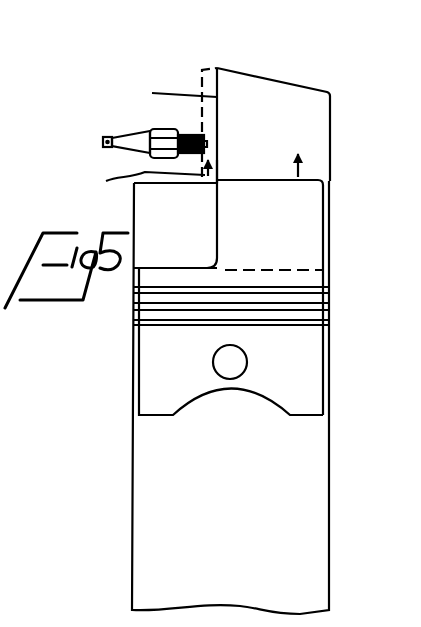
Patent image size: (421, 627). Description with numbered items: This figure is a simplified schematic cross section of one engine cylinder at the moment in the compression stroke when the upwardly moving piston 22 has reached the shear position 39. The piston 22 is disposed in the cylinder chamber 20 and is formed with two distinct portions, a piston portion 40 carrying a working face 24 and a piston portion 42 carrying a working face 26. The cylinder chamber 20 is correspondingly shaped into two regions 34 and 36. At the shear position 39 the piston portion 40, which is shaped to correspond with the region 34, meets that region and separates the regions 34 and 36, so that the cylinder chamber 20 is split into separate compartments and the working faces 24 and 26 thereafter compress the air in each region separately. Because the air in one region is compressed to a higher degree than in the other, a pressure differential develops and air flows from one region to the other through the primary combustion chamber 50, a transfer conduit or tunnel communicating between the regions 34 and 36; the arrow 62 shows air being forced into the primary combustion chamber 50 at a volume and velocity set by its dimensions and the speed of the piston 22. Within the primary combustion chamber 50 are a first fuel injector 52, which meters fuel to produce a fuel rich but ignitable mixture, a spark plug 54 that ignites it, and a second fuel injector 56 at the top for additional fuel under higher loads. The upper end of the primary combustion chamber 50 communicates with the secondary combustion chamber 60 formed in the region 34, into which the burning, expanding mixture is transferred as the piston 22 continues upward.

The cylinder chamber 20 is at (238, 483).
The piston 22 is at (255, 362).
The working face 24 is at (258, 152).
The working face 26 is at (166, 256).
The region of the cylinder chamber 34 is at (316, 131).
The region of the cylinder chamber 36 is at (190, 245).
The shear position 39 is at (219, 176).
The piston portion 40 is at (292, 232).
The piston portion 42 is at (175, 277).
The primary combustion chamber 50 is at (219, 112).
The first fuel injector 52 is at (137, 181).
The spark plug 54 is at (127, 131).
The second fuel injector 56 is at (170, 92).
The secondary combustion chamber 60 is at (296, 90).
The arrow 62 is at (208, 197).